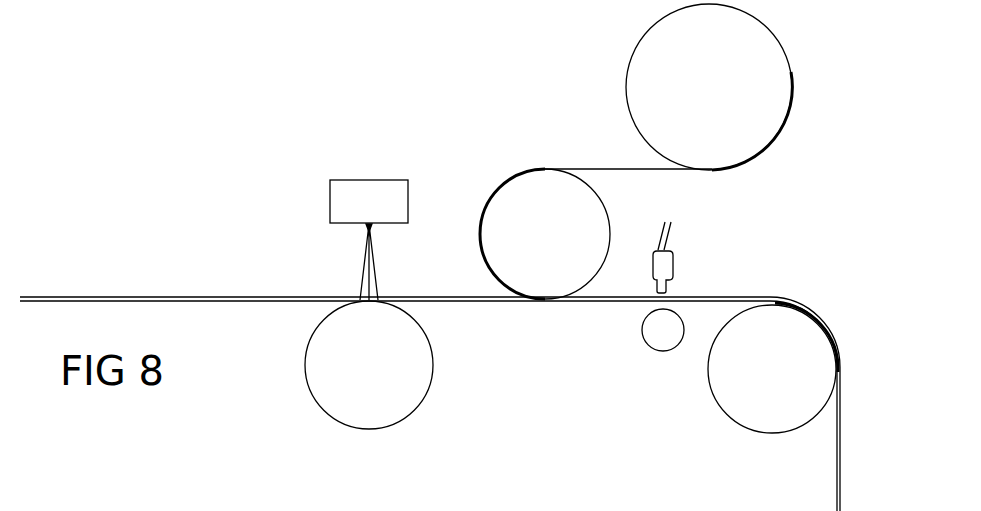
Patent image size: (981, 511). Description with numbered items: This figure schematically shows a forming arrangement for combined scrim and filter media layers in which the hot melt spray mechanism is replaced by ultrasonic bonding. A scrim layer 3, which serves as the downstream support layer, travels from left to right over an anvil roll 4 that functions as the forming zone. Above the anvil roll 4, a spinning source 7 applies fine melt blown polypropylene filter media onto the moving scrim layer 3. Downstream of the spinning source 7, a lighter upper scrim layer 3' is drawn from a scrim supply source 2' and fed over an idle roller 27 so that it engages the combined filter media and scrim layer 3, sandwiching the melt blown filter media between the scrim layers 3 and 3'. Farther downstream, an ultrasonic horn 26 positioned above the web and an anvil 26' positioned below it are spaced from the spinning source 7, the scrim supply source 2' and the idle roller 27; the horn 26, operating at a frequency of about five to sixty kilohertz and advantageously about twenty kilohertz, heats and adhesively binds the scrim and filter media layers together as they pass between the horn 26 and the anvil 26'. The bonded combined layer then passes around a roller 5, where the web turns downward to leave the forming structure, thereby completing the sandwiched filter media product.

The scrim layer 3 is at (430, 363).
The upper scrim layer 3' is at (628, 136).
The scrim supply source 2' is at (709, 87).
The anvil roll 4 is at (369, 365).
The roller 5 is at (773, 368).
The spinning source 7 is at (353, 187).
The idle roller 27 is at (523, 202).
The ultrasonic horn 26 is at (738, 257).
The anvil 26' is at (612, 348).